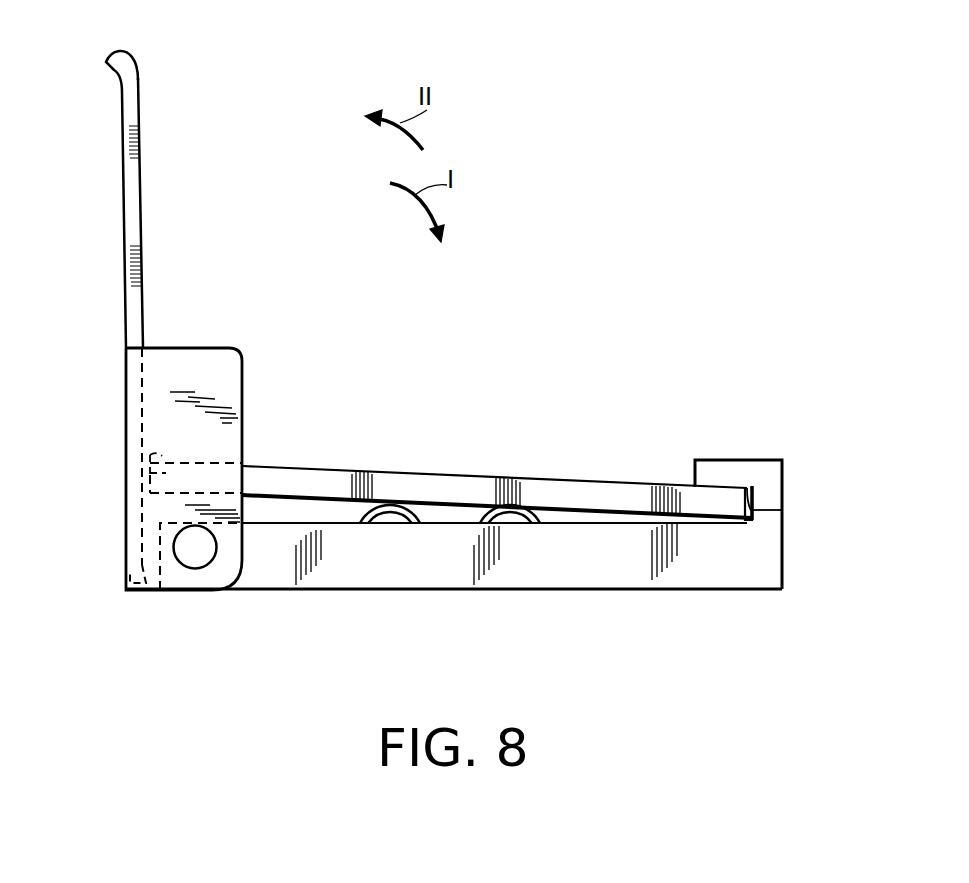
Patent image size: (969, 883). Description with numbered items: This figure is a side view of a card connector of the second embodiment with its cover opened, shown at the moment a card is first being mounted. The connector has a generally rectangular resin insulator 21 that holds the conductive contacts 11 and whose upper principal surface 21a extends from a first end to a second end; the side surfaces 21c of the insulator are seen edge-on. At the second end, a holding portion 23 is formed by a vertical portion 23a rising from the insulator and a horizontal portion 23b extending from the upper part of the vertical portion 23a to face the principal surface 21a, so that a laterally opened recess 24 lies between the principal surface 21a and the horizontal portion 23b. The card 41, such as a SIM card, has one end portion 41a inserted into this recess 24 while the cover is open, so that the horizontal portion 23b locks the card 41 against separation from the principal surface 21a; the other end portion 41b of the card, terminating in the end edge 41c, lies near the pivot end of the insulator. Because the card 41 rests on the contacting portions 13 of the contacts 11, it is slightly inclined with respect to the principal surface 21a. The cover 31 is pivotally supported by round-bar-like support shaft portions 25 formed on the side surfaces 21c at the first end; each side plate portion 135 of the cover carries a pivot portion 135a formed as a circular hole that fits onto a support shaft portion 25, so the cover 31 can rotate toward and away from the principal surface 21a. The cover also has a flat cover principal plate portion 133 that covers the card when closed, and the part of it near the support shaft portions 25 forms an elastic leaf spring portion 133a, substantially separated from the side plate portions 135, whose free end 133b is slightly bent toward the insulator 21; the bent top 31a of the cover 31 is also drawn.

The conductive contacts 11 is at (372, 498).
The contacting portions 13 is at (385, 525).
The insulator 21 is at (555, 594).
The principal surface 21a is at (322, 525).
The side surfaces 21c is at (282, 540).
The holding portion 23 is at (788, 456).
The vertical portion 23a is at (760, 493).
The horizontal portion 23b is at (731, 460).
The recess 24 is at (742, 508).
The support shaft portions 25 is at (203, 568).
The cover 31 is at (118, 225).
The bent end of plate spring 31a is at (118, 88).
The card 41 is at (574, 479).
The one end portion 41a is at (732, 508).
The other end portion 41b is at (150, 464).
The end edge 41c is at (150, 455).
The cover principal plate portion 133 is at (135, 183).
The leaf spring portion 133a is at (127, 508).
The free end 133b is at (130, 578).
The side plate portions 135 is at (193, 372).
The pivot portion 135a is at (182, 556).